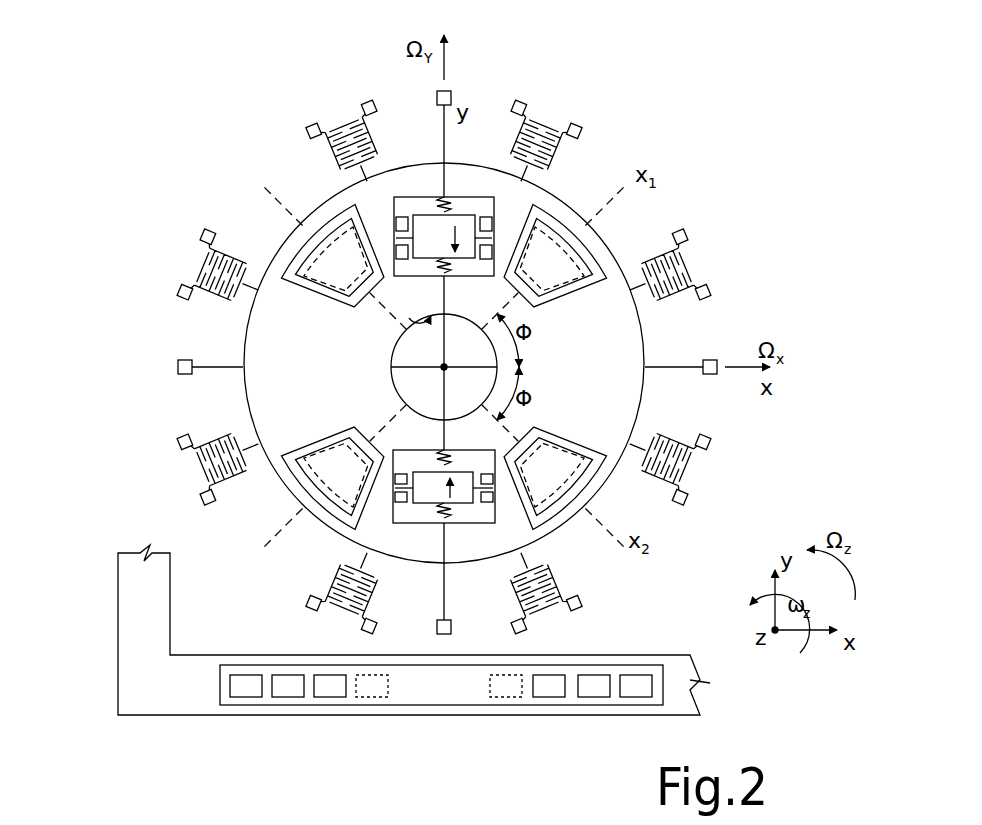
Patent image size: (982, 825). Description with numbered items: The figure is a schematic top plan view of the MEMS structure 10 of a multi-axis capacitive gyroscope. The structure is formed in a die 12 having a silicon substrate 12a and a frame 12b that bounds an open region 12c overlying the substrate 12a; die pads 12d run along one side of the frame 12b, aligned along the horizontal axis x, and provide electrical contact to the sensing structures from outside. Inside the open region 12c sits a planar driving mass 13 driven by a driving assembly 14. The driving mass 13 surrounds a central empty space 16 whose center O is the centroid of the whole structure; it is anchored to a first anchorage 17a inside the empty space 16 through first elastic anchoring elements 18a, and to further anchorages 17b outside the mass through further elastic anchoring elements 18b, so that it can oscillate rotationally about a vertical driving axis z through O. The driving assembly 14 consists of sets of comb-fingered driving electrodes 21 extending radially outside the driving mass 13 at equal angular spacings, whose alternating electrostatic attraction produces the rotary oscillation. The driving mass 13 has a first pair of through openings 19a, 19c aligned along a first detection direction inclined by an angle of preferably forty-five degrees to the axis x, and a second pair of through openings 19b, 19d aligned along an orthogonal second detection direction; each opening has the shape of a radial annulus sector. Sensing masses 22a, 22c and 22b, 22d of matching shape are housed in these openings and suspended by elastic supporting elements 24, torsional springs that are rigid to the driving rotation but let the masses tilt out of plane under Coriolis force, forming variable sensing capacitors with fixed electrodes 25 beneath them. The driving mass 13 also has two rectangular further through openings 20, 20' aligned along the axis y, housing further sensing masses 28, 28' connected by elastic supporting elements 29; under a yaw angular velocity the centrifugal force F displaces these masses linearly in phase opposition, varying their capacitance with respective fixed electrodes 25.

The MEMS structure 10 is at (212, 160).
The die 12 is at (132, 545).
The substrate 12a is at (706, 643).
The frame 12b is at (123, 613).
The open region 12c is at (222, 648).
The die pads 12d is at (328, 698).
The driving mass 13 is at (638, 307).
The driving assembly 14 is at (392, 124).
The empty space 16 is at (414, 330).
The first anchorage 17a is at (446, 367).
The further anchorages 17b is at (718, 360).
The first elastic anchoring elements 18a is at (405, 368).
The further elastic anchoring elements 18b is at (672, 367).
The through opening 19a is at (602, 278).
The through opening 19b is at (372, 198).
The through opening 19c is at (300, 432).
The through opening 19d is at (584, 420).
The further through opening 20 is at (450, 187).
The further through opening 20' is at (452, 525).
The driving electrodes 21 is at (332, 102).
The sensing mass 22a is at (580, 250).
The sensing mass 22b is at (303, 280).
The sensing mass 22c is at (327, 512).
The sensing mass 22d is at (604, 478).
The elastic supporting elements 24 is at (372, 308).
The fixed electrode 25 is at (402, 216).
The further sensing mass 28 is at (444, 214).
The further sensing mass 28' is at (450, 513).
The elastic supporting elements 29 is at (482, 203).